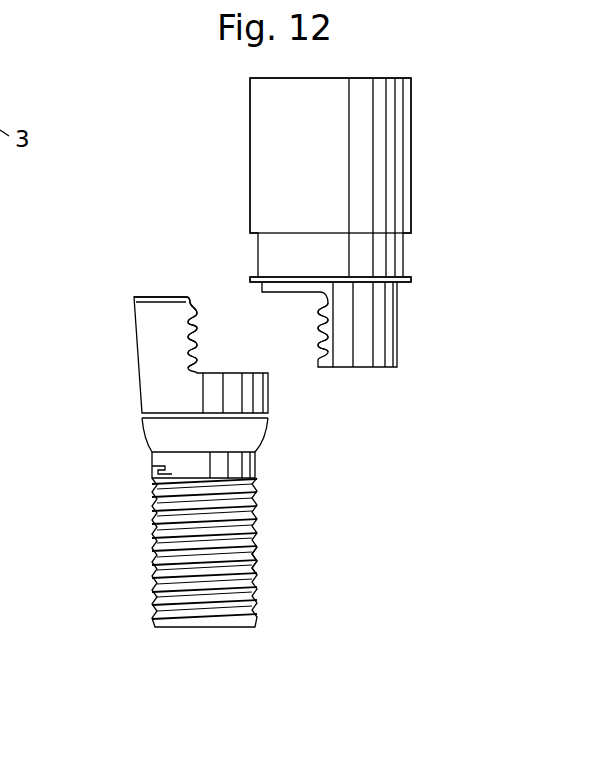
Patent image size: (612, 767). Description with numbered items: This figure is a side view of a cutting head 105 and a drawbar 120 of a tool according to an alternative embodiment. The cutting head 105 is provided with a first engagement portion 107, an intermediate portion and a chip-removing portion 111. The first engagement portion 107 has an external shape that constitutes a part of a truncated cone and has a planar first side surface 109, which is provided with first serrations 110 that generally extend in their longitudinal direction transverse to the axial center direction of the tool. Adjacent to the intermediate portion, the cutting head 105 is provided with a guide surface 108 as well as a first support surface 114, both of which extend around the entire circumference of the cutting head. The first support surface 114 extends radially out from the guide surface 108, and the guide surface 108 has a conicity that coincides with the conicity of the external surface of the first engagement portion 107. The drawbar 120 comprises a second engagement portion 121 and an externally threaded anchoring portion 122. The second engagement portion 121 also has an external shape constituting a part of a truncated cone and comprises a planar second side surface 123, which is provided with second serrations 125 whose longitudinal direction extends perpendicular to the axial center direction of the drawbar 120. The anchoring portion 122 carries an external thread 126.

The cutting head 105 is at (218, 172).
The first engagement portion 107 is at (412, 327).
The guide surface 108 is at (273, 291).
The first side surface 109 is at (308, 334).
The first serrations 110 is at (316, 352).
The chip-removing portion 111 is at (248, 122).
The first support surface 114 is at (405, 280).
The drawbar 120 is at (130, 448).
The second engagement portion 121 is at (128, 333).
The anchoring portion 122 is at (125, 568).
The second side surface 123 is at (206, 342).
The second serrations 125 is at (193, 316).
The external thread 126 is at (258, 566).